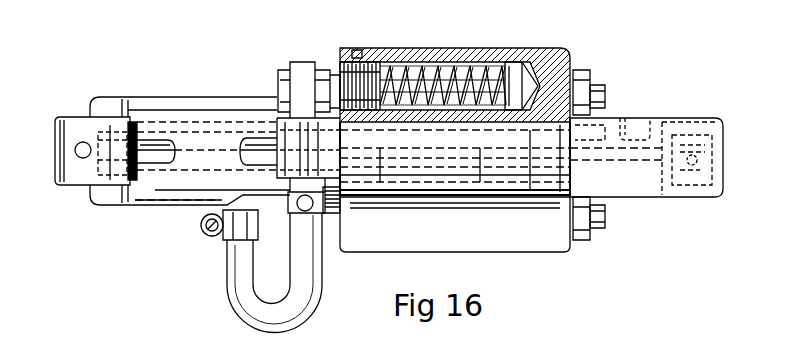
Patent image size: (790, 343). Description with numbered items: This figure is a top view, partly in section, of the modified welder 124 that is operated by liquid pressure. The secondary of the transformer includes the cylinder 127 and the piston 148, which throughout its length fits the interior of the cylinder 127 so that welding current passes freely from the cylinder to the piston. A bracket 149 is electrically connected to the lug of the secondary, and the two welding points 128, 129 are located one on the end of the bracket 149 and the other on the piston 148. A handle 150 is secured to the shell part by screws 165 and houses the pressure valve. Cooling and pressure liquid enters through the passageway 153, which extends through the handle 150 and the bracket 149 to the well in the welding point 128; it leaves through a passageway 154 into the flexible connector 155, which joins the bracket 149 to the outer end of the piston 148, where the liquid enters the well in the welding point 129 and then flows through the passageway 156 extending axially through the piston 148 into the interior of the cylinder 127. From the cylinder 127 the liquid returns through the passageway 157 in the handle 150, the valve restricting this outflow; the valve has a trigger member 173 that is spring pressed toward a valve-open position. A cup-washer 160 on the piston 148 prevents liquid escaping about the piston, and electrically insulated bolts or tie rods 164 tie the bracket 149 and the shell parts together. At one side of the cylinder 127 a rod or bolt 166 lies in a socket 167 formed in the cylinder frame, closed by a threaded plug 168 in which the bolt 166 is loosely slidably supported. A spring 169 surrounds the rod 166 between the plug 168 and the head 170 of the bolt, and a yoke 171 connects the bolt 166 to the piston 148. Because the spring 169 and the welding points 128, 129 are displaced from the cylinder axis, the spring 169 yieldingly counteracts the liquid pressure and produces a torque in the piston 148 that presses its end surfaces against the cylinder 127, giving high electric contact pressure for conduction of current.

The welder 124 is at (508, 237).
The cylinder 127 is at (526, 172).
The welding point 128 is at (158, 152).
The welding point 129 is at (267, 150).
The piston 148 is at (432, 165).
The bracket 149 is at (202, 113).
The handle 150 is at (693, 183).
The passageway 153 is at (204, 138).
The passageway 154 is at (162, 190).
The flexible connector 155 is at (247, 292).
The passageway 156 is at (370, 192).
The passageway 157 is at (628, 157).
The cup-washer 160 is at (500, 170).
The electrically insulated bolts or tie rods 164 is at (582, 82).
The screws 165 is at (603, 95).
The rod or bolt 166 is at (467, 85).
The socket 167 is at (548, 65).
The threaded plug 168 is at (367, 72).
The spring 169 is at (438, 74).
The head 170 is at (510, 80).
The yoke 171 is at (303, 83).
The trigger member 173 is at (638, 133).